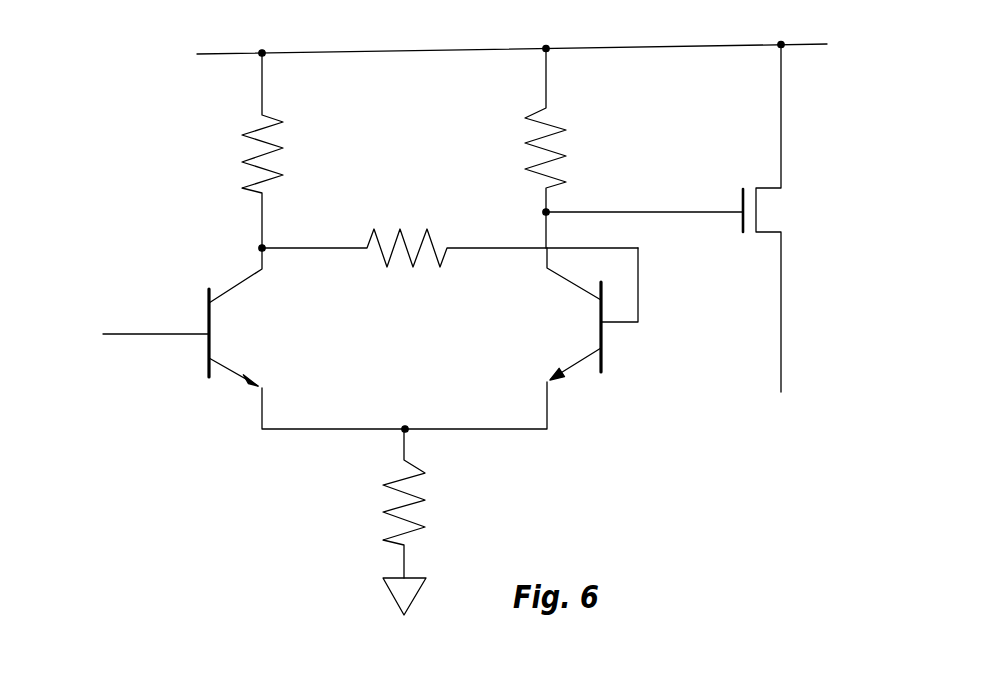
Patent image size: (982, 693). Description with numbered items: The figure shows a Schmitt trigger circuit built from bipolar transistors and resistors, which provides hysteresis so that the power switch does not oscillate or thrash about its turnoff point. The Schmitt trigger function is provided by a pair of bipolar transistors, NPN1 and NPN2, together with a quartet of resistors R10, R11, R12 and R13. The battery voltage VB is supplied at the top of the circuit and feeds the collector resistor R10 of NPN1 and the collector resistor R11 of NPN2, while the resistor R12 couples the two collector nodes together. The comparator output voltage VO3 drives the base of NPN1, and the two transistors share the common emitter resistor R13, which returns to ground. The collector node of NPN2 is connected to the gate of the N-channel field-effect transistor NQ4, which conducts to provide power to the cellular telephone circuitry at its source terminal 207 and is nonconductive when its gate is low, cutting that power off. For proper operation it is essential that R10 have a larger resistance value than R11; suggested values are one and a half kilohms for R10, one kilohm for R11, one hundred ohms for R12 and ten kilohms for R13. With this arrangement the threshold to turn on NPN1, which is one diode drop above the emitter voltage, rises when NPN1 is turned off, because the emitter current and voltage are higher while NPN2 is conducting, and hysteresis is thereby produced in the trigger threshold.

The output node of differential amplifier stage 207 is at (720, 218).
The collector resistor R10 is at (236, 150).
The collector resistor R11 is at (570, 148).
The resistor R12 is at (448, 233).
The emitter resistor R13 is at (429, 520).
The bipolar transistor NPN1 is at (254, 338).
The bipolar transistor NPN2 is at (521, 338).
The N-channel field-effect transistor NQ4 is at (783, 332).
The battery voltage VB is at (495, 52).
The output voltage VO3 is at (69, 332).